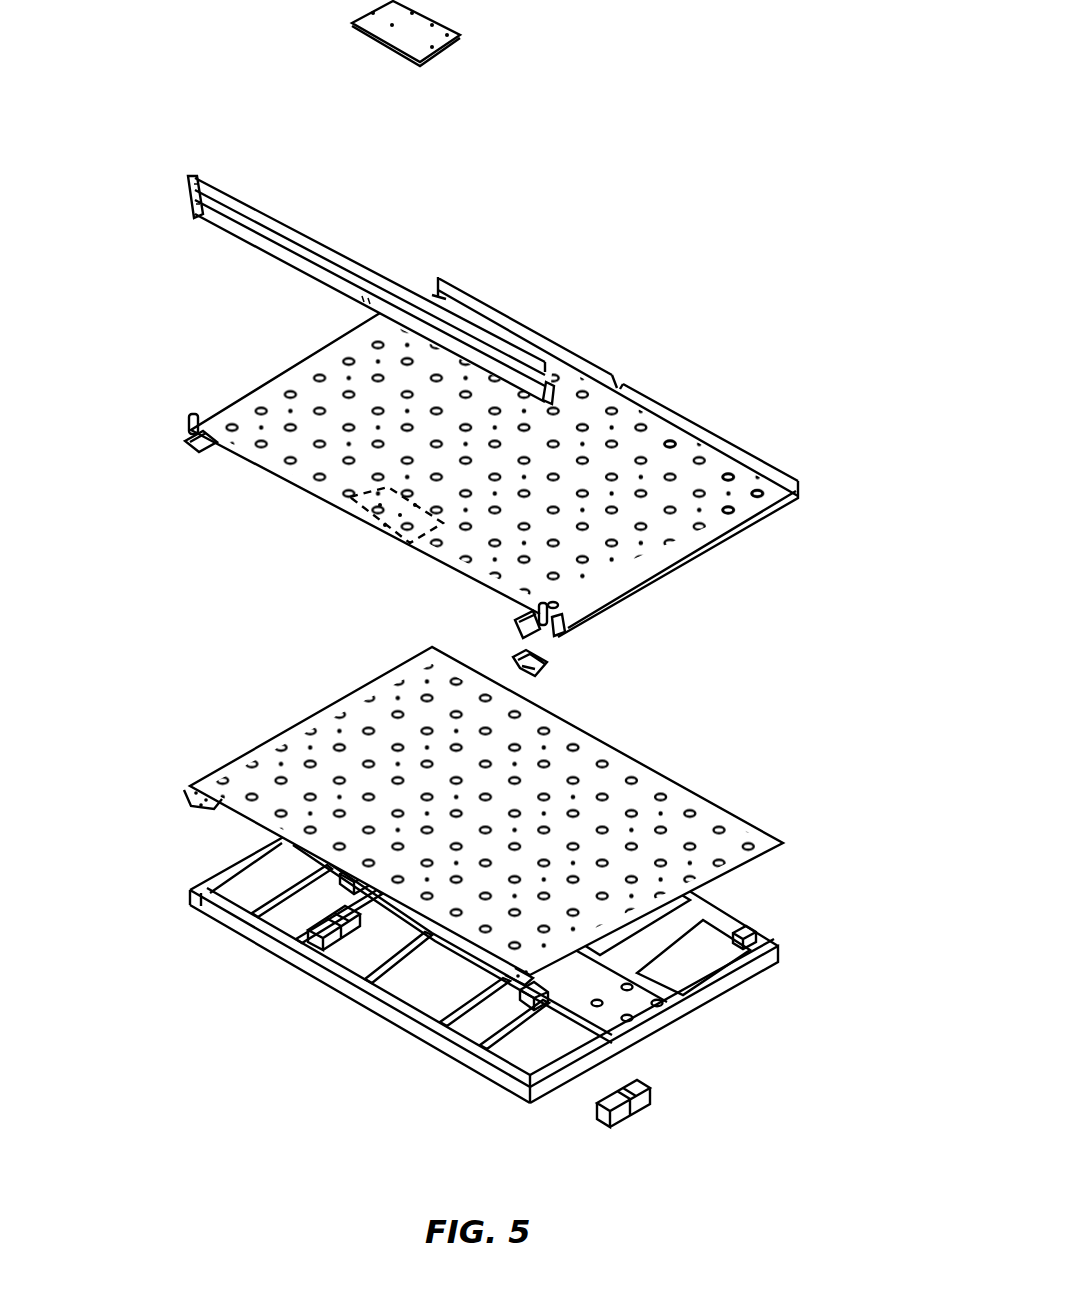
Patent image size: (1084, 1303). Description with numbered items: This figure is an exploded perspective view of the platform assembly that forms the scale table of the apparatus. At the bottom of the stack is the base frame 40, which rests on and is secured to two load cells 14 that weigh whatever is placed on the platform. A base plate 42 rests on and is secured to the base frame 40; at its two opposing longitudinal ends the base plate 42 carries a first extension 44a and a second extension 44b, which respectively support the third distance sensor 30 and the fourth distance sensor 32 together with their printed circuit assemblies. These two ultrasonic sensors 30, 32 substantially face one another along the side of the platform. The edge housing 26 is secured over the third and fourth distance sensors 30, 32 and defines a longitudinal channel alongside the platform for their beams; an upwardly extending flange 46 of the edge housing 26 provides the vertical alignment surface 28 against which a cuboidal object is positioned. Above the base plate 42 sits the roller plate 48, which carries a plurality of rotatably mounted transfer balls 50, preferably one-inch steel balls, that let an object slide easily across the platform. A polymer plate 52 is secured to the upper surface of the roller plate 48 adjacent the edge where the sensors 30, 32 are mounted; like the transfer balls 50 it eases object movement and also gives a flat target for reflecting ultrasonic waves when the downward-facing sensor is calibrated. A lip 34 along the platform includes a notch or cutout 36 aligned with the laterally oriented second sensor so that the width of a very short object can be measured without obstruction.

The load cells 14 is at (290, 950).
The edge housing 26 is at (346, 290).
The vertical alignment surface 28 is at (363, 262).
The third distance sensor 30 is at (186, 420).
The fourth distance sensor 32 is at (574, 623).
The lip 34 is at (522, 475).
The notch or cutout 36 is at (616, 386).
The base frame 40 is at (243, 927).
The base plate 42 is at (447, 886).
The first extension 44a is at (195, 804).
The second extension 44b is at (507, 985).
The upwardly extending flange 46 is at (317, 243).
The roller plate 48 is at (683, 450).
The transfer balls 50 is at (735, 477).
The polymer plate 52 is at (400, 30).